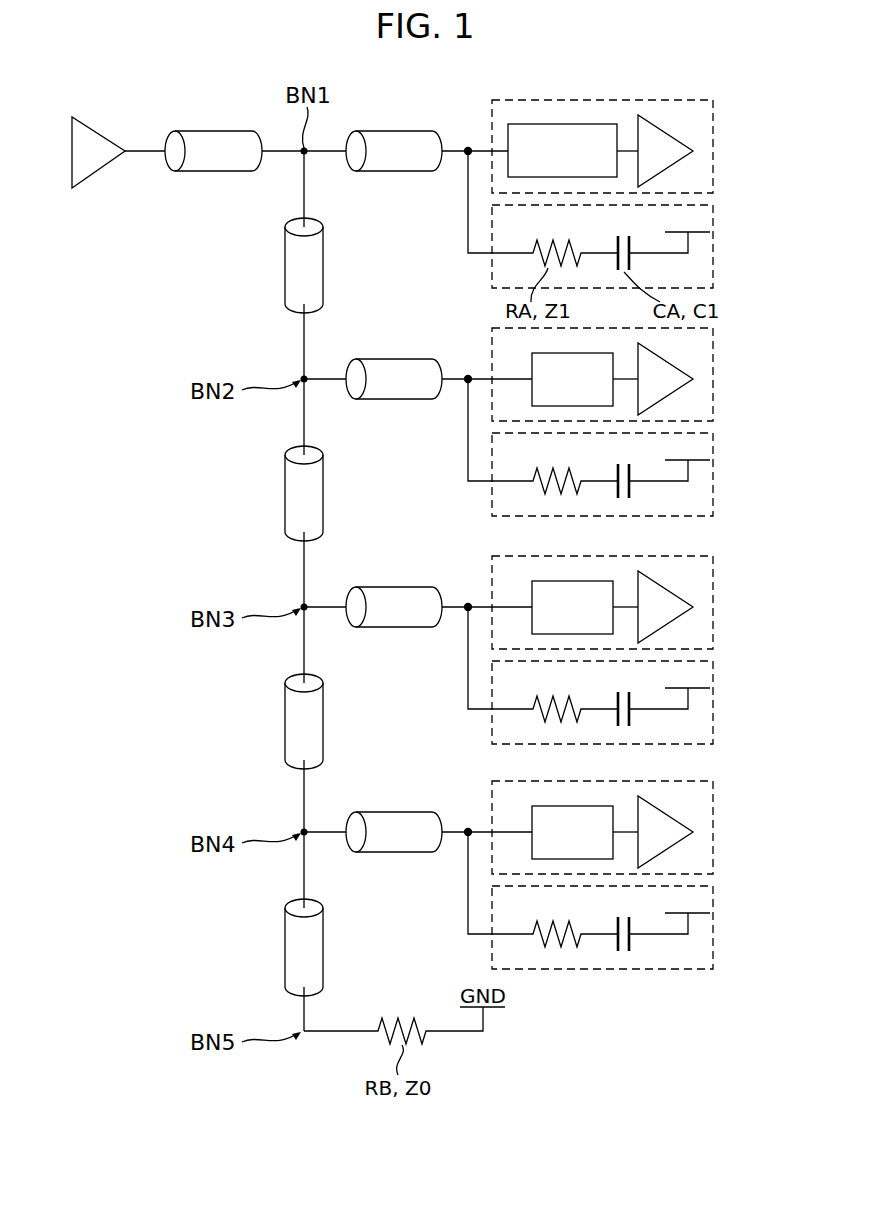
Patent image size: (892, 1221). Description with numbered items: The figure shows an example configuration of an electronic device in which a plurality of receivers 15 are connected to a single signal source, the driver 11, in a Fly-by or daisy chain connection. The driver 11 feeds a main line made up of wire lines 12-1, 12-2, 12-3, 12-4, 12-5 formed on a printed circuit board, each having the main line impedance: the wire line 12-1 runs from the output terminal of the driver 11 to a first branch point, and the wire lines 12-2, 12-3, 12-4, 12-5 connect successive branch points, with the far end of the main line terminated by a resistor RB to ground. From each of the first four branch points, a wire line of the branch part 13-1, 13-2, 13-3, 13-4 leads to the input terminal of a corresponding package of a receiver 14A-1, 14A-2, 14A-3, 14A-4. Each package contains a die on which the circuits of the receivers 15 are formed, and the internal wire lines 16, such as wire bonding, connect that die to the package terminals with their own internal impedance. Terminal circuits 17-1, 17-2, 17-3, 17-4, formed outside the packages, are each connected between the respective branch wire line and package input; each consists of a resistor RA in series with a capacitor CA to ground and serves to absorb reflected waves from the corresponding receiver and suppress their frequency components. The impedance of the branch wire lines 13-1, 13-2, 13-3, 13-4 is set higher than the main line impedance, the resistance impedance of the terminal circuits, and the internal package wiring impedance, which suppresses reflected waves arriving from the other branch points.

The driver 11 is at (116, 137).
The wire line of main line part 12-1 is at (216, 172).
The wire line of main line part 12-2 is at (285, 272).
The wire line of main line part 12-3 is at (285, 500).
The wire line of main line part 12-4 is at (285, 728).
The wire line of main line part 12-5 is at (285, 953).
The wire line of branch part 13-1 is at (400, 172).
The wire line of branch part 13-2 is at (400, 400).
The wire line of branch part 13-3 is at (400, 628).
The wire line of branch part 13-4 is at (400, 853).
The package of receiver 14A-1 is at (641, 132).
The package of receiver 14A-2 is at (715, 381).
The package of receiver 14A-3 is at (715, 609).
The package of receiver 14A-4 is at (715, 834).
The receiver 15 is at (676, 128).
The wire lines in the package 16 is at (582, 124).
The terminal circuit 17-1 is at (715, 233).
The terminal circuit 17-2 is at (715, 461).
The terminal circuit 17-3 is at (715, 689).
The terminal circuit 17-4 is at (715, 914).